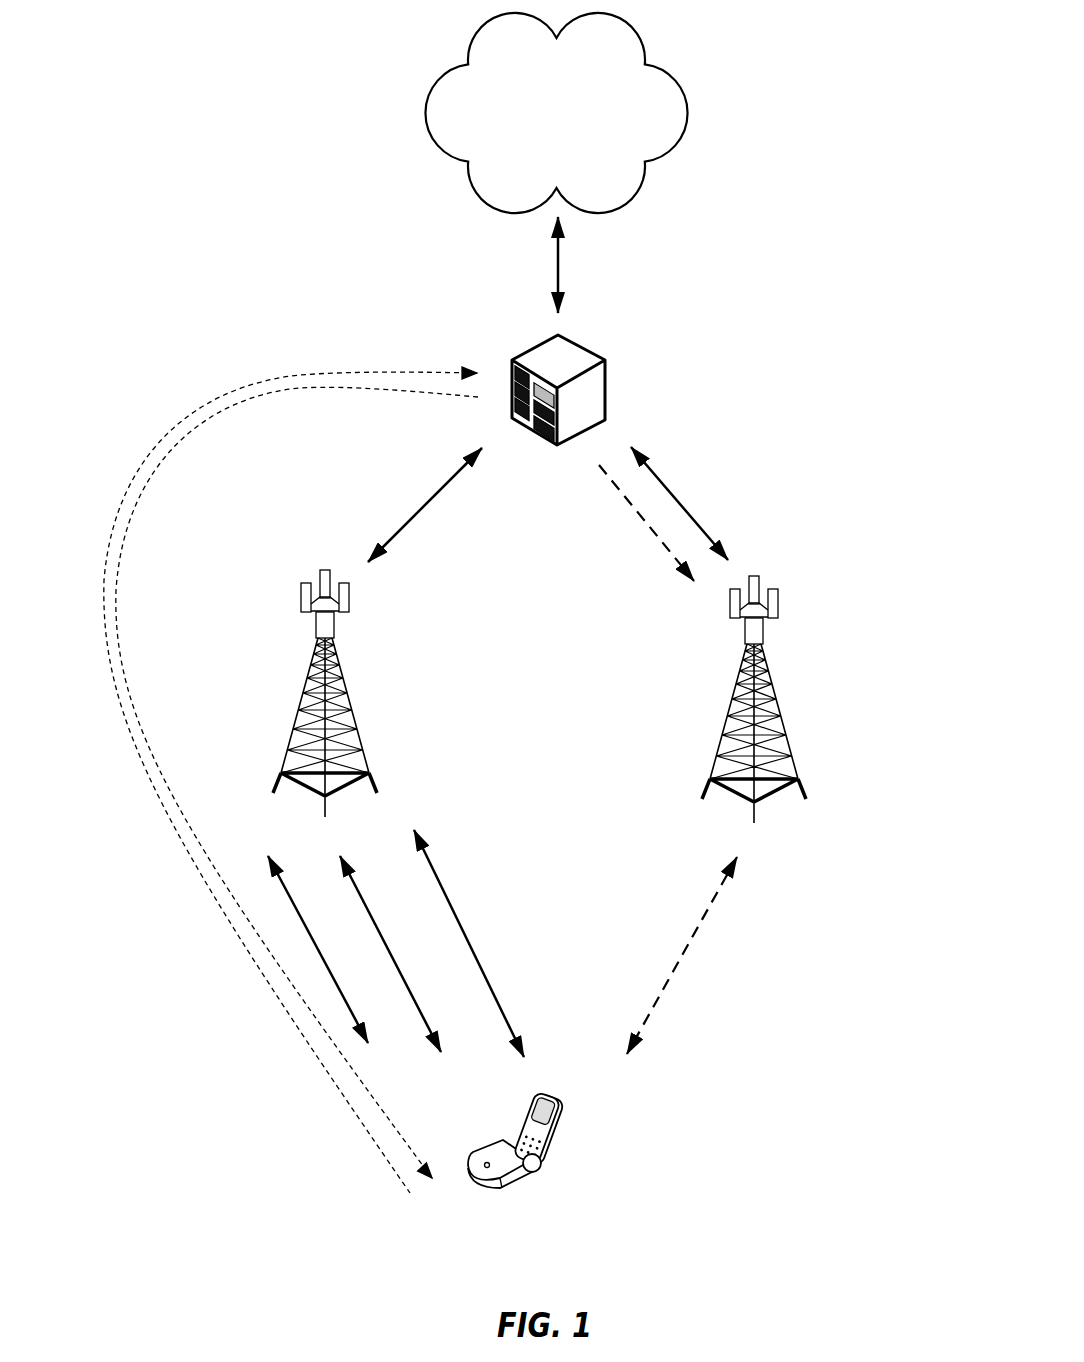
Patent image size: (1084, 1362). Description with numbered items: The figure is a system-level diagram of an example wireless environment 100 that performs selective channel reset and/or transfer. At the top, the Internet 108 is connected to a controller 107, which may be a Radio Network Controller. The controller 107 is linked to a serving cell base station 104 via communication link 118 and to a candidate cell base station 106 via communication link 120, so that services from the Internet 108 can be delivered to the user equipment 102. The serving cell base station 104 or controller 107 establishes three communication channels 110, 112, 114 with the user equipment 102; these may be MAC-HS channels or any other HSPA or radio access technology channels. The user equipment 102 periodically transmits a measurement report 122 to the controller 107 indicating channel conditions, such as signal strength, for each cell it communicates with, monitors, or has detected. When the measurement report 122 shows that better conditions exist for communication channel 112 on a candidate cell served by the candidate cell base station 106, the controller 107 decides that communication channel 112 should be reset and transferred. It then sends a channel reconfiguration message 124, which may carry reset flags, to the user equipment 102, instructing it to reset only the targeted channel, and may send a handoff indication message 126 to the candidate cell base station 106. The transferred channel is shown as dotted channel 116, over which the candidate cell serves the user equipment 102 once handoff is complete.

The wireless environment 100 is at (770, 122).
The user equipment 102 is at (529, 1101).
The serving cell base station 104 is at (296, 738).
The candidate cell base station 106 is at (779, 730).
The controller 107 is at (605, 360).
The Internet 108 is at (575, 141).
The communication channel 110 is at (316, 945).
The communication channel 112 is at (389, 950).
The communication channel 114 is at (472, 950).
The transferred communication channel 116 is at (690, 940).
The communication link 118 is at (418, 512).
The communication link 120 is at (680, 502).
The measurement report 122 is at (234, 918).
The channel reconfiguration message 124 is at (141, 457).
The handoff indication message 126 is at (627, 497).